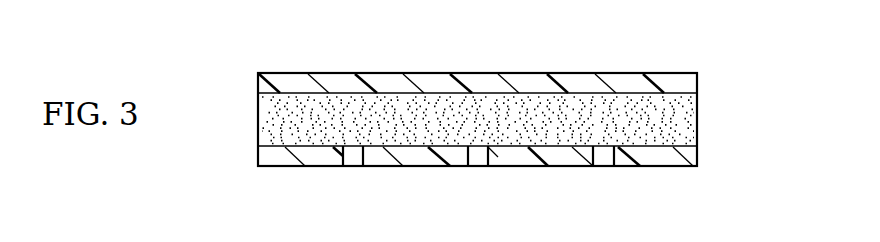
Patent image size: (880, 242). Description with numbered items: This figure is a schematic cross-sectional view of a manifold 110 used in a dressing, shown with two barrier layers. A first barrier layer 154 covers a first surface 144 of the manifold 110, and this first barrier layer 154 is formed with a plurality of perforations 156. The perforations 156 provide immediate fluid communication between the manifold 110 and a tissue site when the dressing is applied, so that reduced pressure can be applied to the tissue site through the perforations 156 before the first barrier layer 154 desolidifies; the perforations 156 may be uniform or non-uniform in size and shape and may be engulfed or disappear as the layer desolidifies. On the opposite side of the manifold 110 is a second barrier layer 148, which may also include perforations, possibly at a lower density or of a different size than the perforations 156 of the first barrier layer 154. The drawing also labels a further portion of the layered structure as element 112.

The manifold 110 is at (260, 122).
The second barrier layer 148 is at (478, 77).
The first surface 144 is at (420, 147).
The first barrier layer 154 is at (520, 158).
The perforations 156 is at (352, 153).
The bottom layer end segment 112 is at (663, 153).